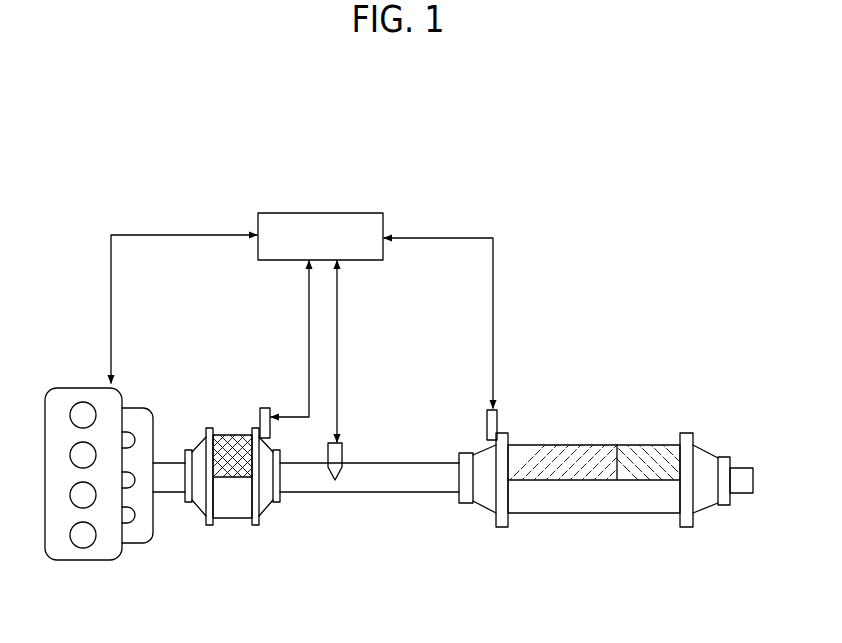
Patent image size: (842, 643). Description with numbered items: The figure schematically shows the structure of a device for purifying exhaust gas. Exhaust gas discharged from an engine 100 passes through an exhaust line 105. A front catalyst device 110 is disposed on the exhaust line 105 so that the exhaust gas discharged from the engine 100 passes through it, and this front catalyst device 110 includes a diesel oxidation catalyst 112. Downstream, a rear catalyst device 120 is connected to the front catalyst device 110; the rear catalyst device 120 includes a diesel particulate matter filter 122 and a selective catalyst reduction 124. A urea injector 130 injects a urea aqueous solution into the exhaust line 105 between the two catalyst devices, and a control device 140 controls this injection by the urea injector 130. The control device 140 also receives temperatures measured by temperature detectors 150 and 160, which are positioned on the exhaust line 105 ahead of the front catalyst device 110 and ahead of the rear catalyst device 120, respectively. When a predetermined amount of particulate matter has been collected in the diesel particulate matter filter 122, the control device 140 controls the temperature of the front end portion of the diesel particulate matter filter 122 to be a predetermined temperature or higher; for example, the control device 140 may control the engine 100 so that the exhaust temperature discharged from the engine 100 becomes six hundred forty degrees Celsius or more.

The engine 100 is at (70, 386).
The exhaust line 105 is at (173, 494).
The front catalyst device 110 is at (232, 488).
The diesel oxidation catalyst 112 is at (220, 435).
The rear catalyst device 120 is at (606, 499).
The diesel particulate matter filter 122 is at (580, 452).
The selective catalyst reduction 124 is at (645, 452).
The urea injector 130 is at (342, 450).
The control device 140 is at (354, 212).
The temperature detector 150 is at (262, 407).
The temperature detector 160 is at (486, 415).